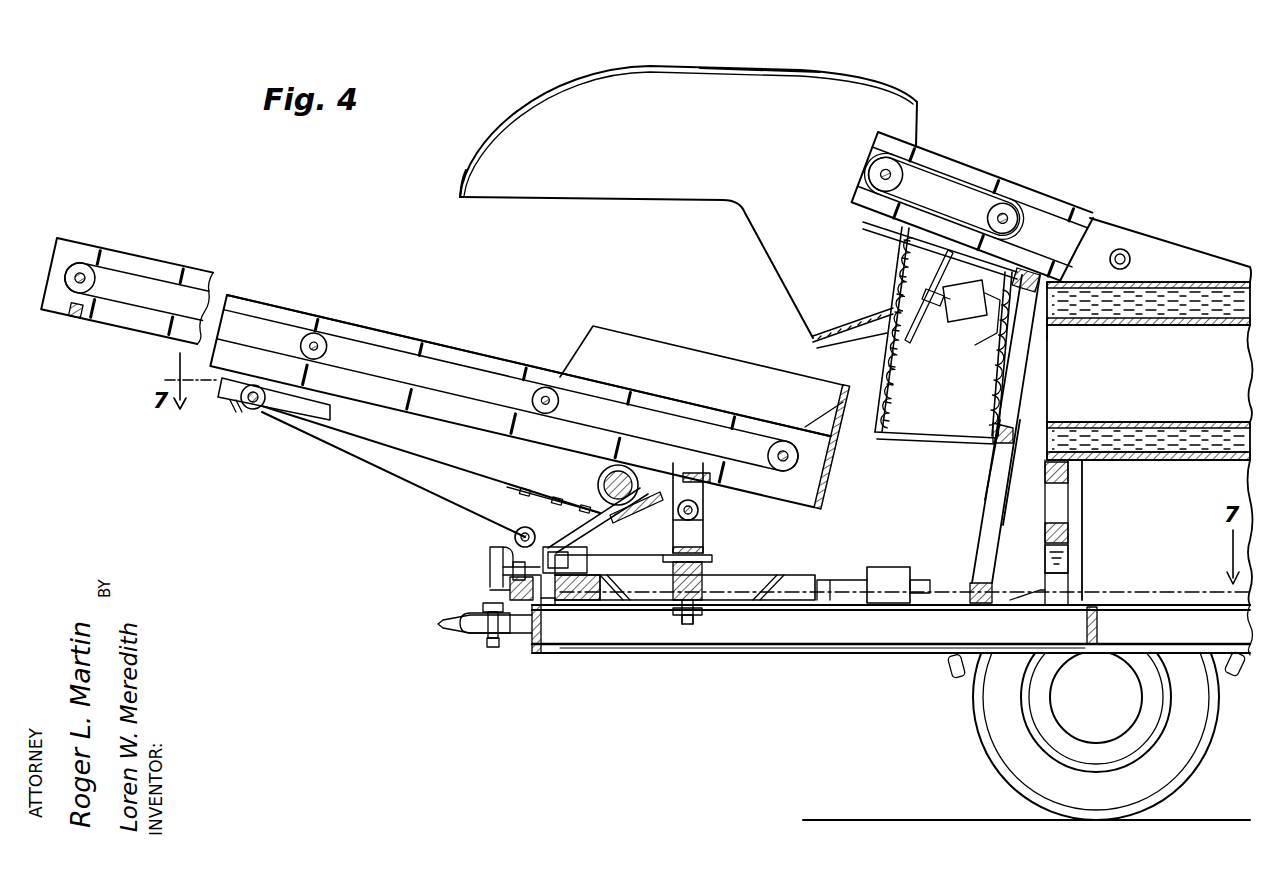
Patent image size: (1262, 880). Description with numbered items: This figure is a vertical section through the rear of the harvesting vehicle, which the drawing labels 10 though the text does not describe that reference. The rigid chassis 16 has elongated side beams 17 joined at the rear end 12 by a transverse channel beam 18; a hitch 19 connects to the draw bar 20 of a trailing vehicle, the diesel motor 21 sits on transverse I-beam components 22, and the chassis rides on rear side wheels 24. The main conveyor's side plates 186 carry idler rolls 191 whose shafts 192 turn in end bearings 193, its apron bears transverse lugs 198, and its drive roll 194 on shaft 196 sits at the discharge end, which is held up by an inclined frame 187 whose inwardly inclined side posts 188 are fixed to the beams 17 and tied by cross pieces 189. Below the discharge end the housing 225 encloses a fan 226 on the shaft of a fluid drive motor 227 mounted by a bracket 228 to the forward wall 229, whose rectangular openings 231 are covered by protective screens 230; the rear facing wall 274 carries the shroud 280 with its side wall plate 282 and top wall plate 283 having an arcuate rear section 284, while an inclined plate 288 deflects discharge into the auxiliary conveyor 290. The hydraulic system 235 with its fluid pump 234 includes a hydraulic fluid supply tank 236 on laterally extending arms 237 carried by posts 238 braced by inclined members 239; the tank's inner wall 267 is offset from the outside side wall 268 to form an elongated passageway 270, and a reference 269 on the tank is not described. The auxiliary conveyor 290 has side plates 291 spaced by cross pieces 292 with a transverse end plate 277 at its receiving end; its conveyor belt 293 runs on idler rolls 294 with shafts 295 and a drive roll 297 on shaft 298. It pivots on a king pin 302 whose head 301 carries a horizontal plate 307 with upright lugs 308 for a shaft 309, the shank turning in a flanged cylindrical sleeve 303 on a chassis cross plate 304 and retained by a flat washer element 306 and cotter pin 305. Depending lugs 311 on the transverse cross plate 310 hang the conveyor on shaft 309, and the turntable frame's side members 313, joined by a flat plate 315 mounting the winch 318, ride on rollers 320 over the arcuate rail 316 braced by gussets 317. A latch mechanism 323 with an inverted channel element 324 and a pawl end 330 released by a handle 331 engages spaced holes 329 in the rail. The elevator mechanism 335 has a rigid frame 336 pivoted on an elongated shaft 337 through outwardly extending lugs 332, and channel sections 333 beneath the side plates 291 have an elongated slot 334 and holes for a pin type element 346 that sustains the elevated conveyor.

The harvesting machine 10 is at (808, 698).
The rear end 12 is at (538, 653).
The chassis 16 is at (645, 655).
The side beams 17 is at (725, 655).
The transverse channel beam 18 is at (1010, 417).
The hitch 19 is at (497, 649).
The draw bar 20 is at (445, 632).
The diesel motor 21 is at (1195, 536).
The transverse I-beam components 22 is at (1100, 625).
The rear side wheels 24 is at (1195, 758).
The side plates 186 is at (1130, 215).
The inclined frame 187 is at (985, 497).
The side posts 188 is at (1002, 527).
The cross pieces 189 is at (1047, 318).
The idler rolls 191 is at (1012, 213).
The shafts 192 is at (1020, 216).
The end bearings 193 is at (1128, 255).
The drive roll 194 is at (915, 152).
The shaft 196 is at (868, 175).
The lugs 198 is at (992, 182).
The housing 225 is at (915, 445).
The fan 226 is at (912, 345).
The fluid drive motor 227 is at (950, 325).
The bracket 228 is at (1002, 290).
The forward wall 229 is at (988, 446).
The protective screens 230 is at (993, 402).
The rectangular openings 231 is at (990, 410).
The fluid pump 234 is at (920, 580).
The hydraulic system 235 is at (880, 567).
The hydraulic fluid supply tank 236 is at (958, 678).
The laterally extending arms 237 is at (1070, 472).
The posts 238 is at (1068, 588).
The inclined members 239 is at (1066, 556).
The inner wall 267 is at (1180, 422).
The outside side wall 268 is at (1200, 283).
The beam liner 269 is at (1197, 452).
The elongated passageway 270 is at (1195, 371).
The rear facing wall 274 is at (882, 383).
The transverse end plate 277 is at (828, 472).
The shroud 280 is at (527, 110).
The side wall plate 282 is at (610, 201).
The top wall plate 283 is at (684, 68).
The arcuate rear section 284 is at (458, 192).
The inclined plate 288 is at (852, 326).
The auxiliary conveyor 290 is at (360, 318).
The side plates 291 is at (470, 352).
The cross pieces 292 is at (70, 312).
The conveyor belt 293 is at (248, 300).
The idler rolls 294 is at (328, 352).
The shafts 295 is at (300, 350).
The drive roll 297 is at (100, 268).
The shaft 298 is at (80, 272).
The head 301 is at (660, 560).
The king pin 302 is at (712, 559).
The flanged cylindrical sleeve 303 is at (703, 578).
The chassis cross plate 304 is at (703, 612).
The cotter pin 305 is at (694, 626).
The flat washer element 306 is at (636, 602).
The horizontal plate 307 is at (704, 543).
The upright lugs 308 is at (704, 528).
The shaft 309 is at (700, 513).
The transverse cross plate 310 is at (690, 495).
The depending lugs 311 is at (656, 470).
The side members 313 is at (590, 550).
The flat plate 315 is at (587, 532).
The arcuate rail 316 is at (818, 575).
The gussets 317 is at (775, 604).
The winch 318 is at (600, 496).
The rollers 320 is at (585, 603).
The latch mechanism 323 is at (500, 591).
The inverted channel element 324 is at (488, 550).
The spaced holes 329 is at (680, 620).
The pawl end 330 is at (548, 602).
The handle 331 is at (490, 568).
The outwardly extending lugs 332 is at (500, 492).
The channel sections 333 is at (240, 412).
The elongated slot 334 is at (250, 410).
The elevator mechanism 335 is at (433, 490).
The rigid frame 336 is at (392, 466).
The elongated shaft 337 is at (514, 536).
The pin type element 346 is at (262, 430).